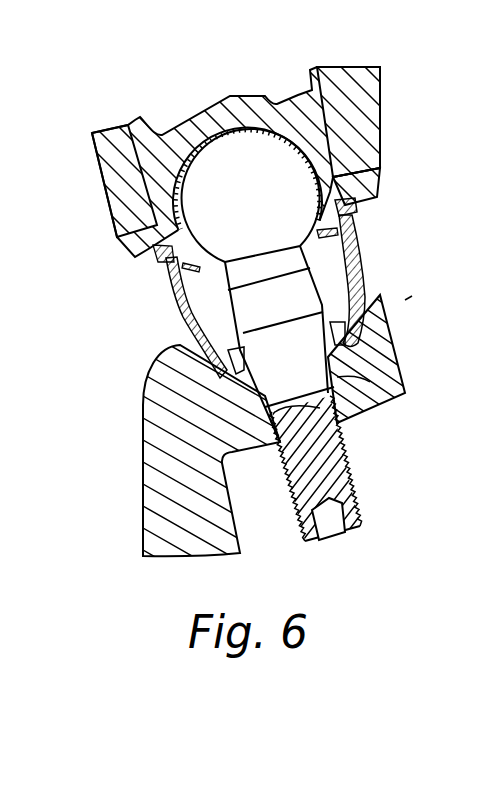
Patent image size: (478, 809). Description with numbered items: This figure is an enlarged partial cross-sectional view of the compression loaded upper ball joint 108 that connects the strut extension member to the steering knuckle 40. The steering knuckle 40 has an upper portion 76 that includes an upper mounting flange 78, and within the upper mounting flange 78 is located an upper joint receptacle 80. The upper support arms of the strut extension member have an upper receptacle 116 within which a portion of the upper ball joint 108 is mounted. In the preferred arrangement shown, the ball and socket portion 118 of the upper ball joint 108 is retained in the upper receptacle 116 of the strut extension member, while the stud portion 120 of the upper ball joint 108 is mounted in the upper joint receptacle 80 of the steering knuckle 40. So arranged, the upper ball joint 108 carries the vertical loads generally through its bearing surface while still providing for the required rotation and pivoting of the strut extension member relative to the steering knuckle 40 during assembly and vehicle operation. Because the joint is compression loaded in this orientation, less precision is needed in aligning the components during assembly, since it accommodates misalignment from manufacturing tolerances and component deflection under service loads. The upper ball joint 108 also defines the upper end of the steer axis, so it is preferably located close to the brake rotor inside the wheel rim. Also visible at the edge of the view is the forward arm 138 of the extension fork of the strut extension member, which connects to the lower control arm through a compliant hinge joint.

The steering knuckle 40 is at (149, 538).
The upper portion 76 is at (143, 500).
The upper mounting flange 78 is at (397, 366).
The upper joint receptacle 80 is at (298, 437).
The compression loaded upper ball joint 108 is at (242, 80).
The upper receptacle 116 is at (148, 140).
The ball and socket portion 118 is at (332, 133).
The stud portion 120 is at (335, 377).
The forward arm 138 is at (441, 295).